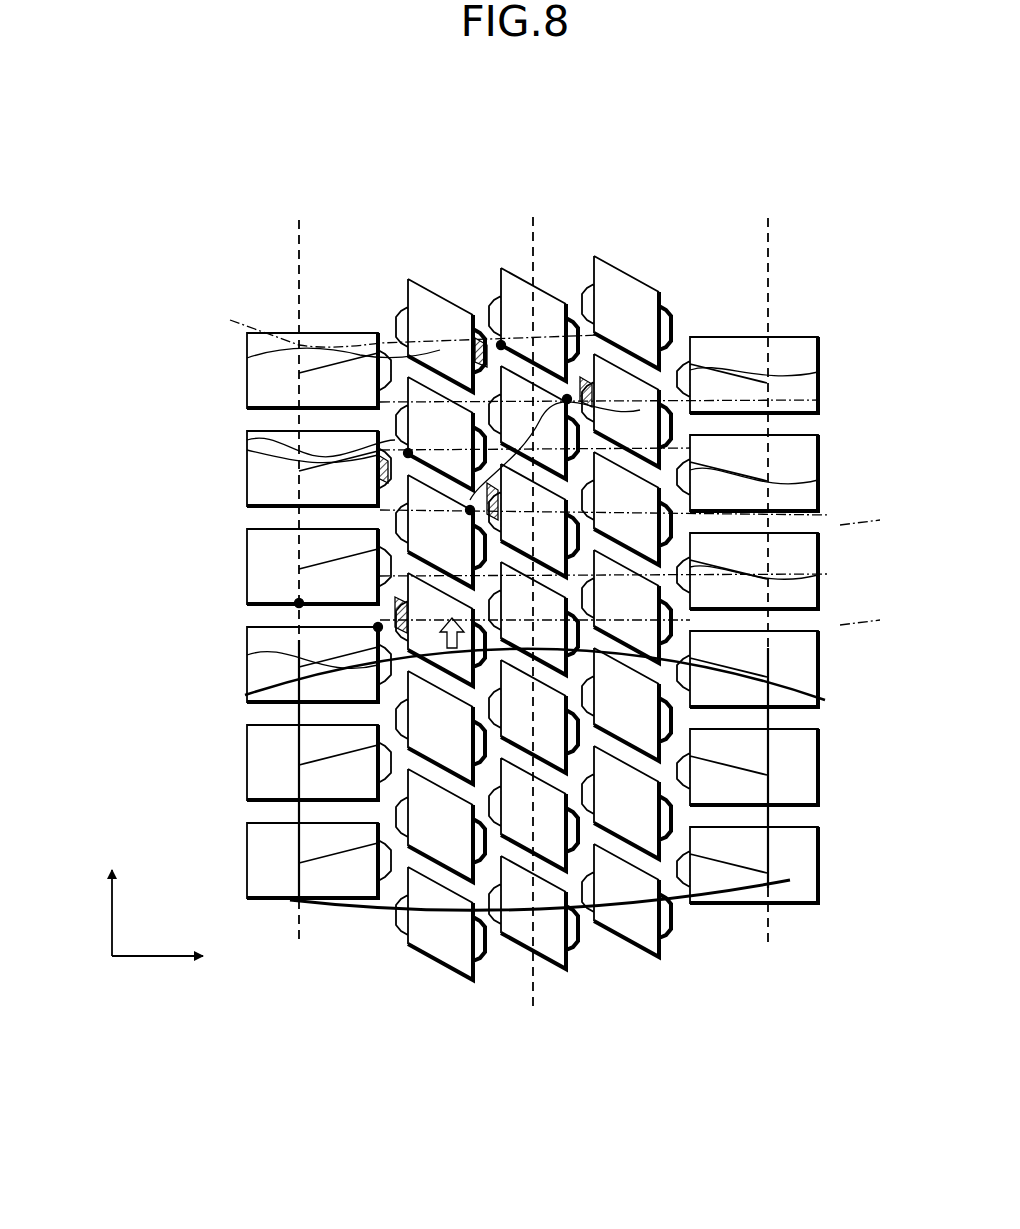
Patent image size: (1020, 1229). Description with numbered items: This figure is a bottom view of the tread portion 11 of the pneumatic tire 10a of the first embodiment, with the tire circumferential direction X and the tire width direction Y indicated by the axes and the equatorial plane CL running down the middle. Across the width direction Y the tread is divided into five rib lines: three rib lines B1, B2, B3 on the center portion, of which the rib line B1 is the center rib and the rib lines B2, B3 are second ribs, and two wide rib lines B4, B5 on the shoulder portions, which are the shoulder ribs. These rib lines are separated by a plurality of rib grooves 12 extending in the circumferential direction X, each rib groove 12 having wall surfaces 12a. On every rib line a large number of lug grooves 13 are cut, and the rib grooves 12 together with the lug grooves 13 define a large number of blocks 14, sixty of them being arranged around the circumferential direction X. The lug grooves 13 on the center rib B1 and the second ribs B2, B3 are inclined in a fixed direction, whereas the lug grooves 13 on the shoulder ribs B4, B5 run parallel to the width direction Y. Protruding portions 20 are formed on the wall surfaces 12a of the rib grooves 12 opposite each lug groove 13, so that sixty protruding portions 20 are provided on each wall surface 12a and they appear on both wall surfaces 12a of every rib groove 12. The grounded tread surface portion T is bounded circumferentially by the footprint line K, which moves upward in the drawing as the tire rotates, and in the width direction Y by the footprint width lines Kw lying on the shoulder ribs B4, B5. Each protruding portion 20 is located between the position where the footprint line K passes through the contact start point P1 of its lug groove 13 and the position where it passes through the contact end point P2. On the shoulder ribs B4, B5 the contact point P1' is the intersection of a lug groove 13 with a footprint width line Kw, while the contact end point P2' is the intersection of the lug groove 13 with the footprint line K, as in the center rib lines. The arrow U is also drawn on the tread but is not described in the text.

The pneumatic tire 10a is at (120, 226).
The tread portion 11 is at (800, 356).
The rib groove 12 is at (370, 326).
The wall surface 12a is at (595, 335).
The lug groove 13 is at (435, 872).
The block 14 is at (265, 780).
The protruding portion 20 is at (378, 455).
The center rib B1 is at (509, 268).
The second rib B2 is at (431, 283).
The second rib B3 is at (614, 260).
The shoulder rib B4 is at (325, 313).
The shoulder rib B5 is at (805, 326).
The footprint line K is at (345, 355).
The footprint width line Kw is at (298, 232).
The equatorial plane CL is at (532, 631).
The contact start point P1 is at (445, 409).
The contact end point P2 is at (439, 410).
The contact point P1' is at (265, 646).
The contact end point P2' is at (226, 579).
The rotation direction U is at (452, 660).
The tread surface portion T is at (363, 848).
The tire circumferential direction X is at (109, 898).
The tire width direction Y is at (169, 960).